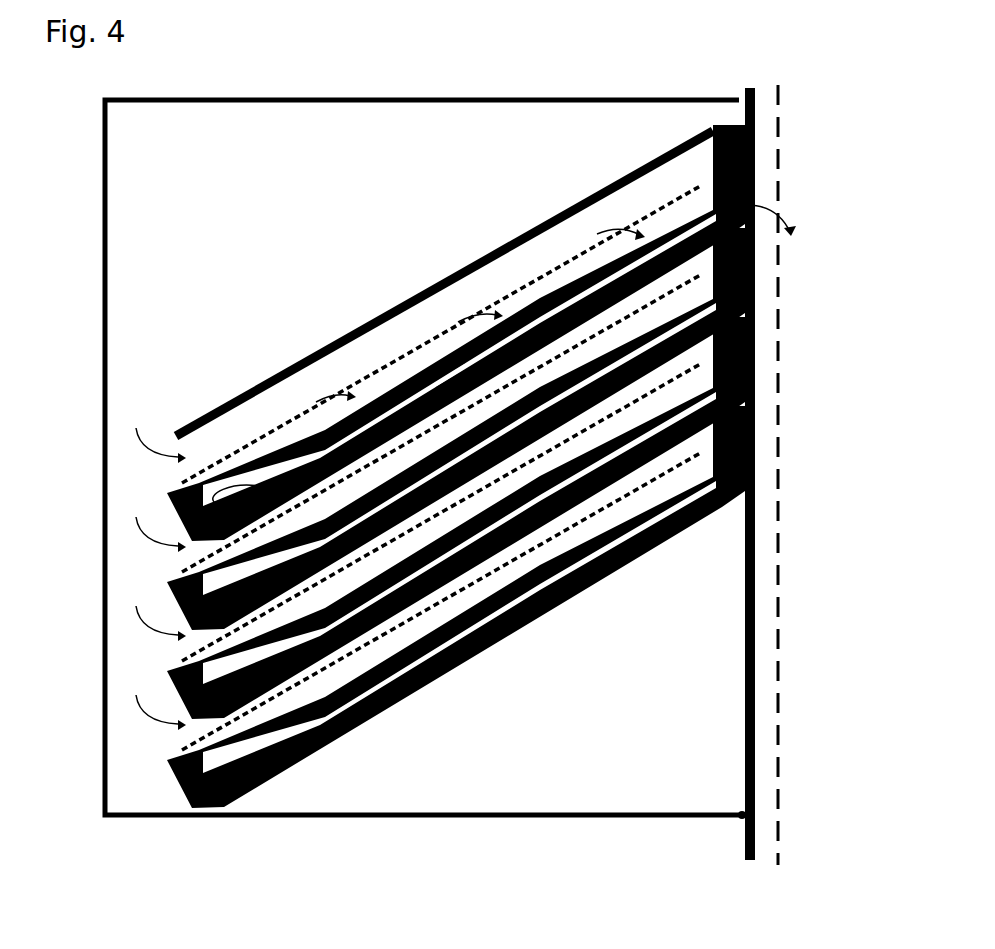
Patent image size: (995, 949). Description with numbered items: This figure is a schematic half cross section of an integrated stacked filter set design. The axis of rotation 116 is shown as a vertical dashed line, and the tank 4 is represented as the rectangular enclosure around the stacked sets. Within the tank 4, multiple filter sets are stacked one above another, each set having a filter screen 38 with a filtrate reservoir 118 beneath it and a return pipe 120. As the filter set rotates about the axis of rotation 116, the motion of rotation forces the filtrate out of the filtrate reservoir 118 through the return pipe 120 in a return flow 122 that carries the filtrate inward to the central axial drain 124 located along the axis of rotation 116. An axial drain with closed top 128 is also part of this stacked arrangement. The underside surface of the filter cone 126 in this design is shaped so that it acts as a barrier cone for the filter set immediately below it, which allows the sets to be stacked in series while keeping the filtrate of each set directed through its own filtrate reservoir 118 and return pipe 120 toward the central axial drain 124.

The tank 4 is at (318, 100).
The filter screen 38 is at (500, 298).
The axis of rotation 116 is at (779, 586).
The filtrate reservoir in stacked set 118 is at (583, 272).
The return pipe 120 is at (303, 450).
The return flow to central drain 122 is at (770, 207).
The central axial drain 124 is at (781, 318).
The underside surface of the filter cone 126 is at (515, 522).
The axial drain with closed top 128 is at (214, 790).